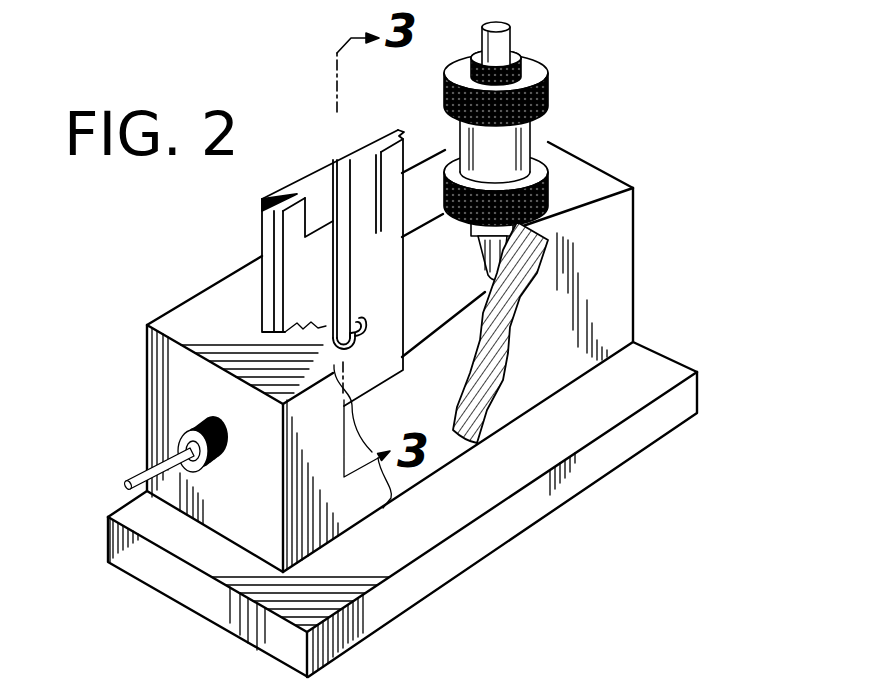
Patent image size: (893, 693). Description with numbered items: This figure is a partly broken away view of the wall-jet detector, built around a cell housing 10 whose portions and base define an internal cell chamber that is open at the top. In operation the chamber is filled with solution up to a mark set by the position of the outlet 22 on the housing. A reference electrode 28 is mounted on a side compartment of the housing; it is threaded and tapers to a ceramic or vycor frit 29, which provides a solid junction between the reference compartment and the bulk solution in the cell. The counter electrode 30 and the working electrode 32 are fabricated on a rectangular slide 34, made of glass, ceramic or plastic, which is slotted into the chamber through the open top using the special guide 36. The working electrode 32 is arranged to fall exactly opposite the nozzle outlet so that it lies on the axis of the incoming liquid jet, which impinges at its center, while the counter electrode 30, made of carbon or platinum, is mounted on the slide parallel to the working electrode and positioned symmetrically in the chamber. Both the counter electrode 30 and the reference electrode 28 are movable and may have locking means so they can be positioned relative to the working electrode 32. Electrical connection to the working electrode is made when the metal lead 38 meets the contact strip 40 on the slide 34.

The cell housing 10 is at (651, 288).
The outlet 22 is at (134, 461).
The reference electrode 28 is at (560, 90).
The ceramic or vycor frit 29 is at (481, 298).
The counter electrode 30 is at (363, 375).
The working electrode 32 is at (372, 325).
The rectangular slide 34 is at (298, 160).
The guide 36 is at (247, 241).
The metal lead 38 is at (350, 277).
The contact strip 40 is at (323, 186).